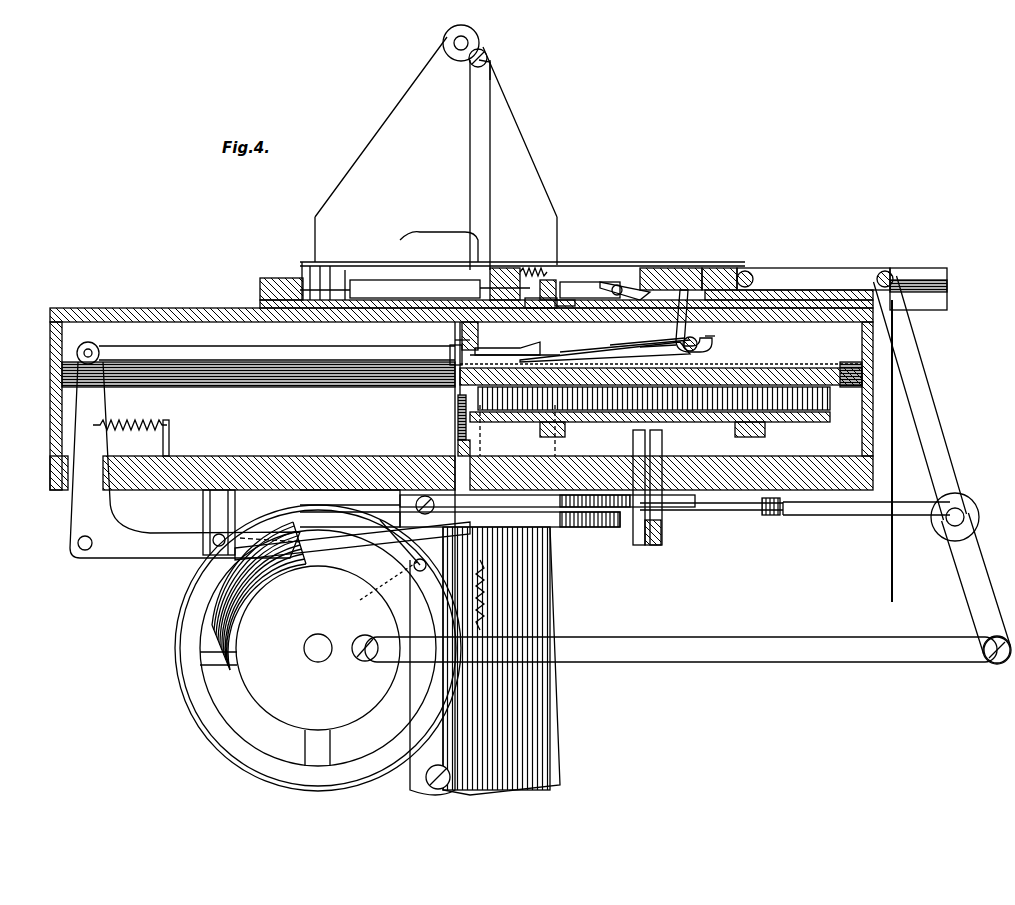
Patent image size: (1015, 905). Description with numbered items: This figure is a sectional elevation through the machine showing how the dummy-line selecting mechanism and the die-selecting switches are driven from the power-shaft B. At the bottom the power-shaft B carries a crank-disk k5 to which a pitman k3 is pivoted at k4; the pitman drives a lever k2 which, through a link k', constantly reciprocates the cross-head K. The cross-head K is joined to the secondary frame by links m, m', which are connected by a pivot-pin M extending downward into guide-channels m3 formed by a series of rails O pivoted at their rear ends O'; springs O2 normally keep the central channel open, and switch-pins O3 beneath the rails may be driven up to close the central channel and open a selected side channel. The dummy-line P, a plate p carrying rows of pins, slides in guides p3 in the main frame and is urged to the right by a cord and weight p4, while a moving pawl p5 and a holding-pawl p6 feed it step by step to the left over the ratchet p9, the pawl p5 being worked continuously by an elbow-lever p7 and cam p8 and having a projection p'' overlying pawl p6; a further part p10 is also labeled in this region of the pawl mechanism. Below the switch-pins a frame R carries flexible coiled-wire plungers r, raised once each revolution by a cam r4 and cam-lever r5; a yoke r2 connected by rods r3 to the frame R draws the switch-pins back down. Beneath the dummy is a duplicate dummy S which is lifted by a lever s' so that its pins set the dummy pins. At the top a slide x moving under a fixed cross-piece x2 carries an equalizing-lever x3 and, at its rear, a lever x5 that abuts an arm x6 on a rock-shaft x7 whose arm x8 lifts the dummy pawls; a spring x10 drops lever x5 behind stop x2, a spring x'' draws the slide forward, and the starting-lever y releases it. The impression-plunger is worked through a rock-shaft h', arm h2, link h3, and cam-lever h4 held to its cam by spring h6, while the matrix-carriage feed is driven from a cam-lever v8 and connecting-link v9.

The rock-shaft h' is at (435, 43).
The arm h2 is at (486, 44).
The link h3 is at (480, 200).
The pivot-pin M is at (280, 278).
The link m' is at (522, 271).
The guide-channels m3 is at (346, 285).
The rails O is at (439, 263).
The springs O2 is at (425, 291).
The rear ends of rails O' is at (512, 268).
The spring x'' is at (550, 251).
The equalizing-lever x3 is at (560, 280).
The link m is at (571, 277).
The lever x5 is at (605, 282).
The starting-lever y is at (622, 285).
The fixed cross-piece x2 is at (557, 287).
The slide x is at (623, 296).
The spring x10 is at (676, 310).
The cross-head K is at (735, 270).
The link k' is at (842, 278).
The board or plate p is at (403, 353).
The guides p3 is at (300, 380).
The dummy-line P is at (661, 364).
The ratchet p9 is at (815, 372).
The duplicate dummy S is at (818, 422).
The lever s' is at (657, 488).
The flexible plungers r is at (456, 422).
The frame R is at (458, 448).
The rods r3 is at (442, 441).
The switch-pins O3 is at (460, 345).
The yoke r2 is at (445, 348).
The moving pawl p5 is at (480, 348).
The projection p'' is at (515, 338).
The holding-pawl p6 is at (580, 356).
The lever p10 is at (625, 338).
The arm x8 is at (640, 348).
The rock-shaft x7 is at (658, 334).
The arm x6 is at (712, 335).
The elbow-lever p7 is at (185, 460).
The cam-lever r5 is at (352, 541).
The power-shaft B is at (320, 655).
The crank-disk k5 is at (318, 648).
The cam p8 is at (259, 596).
The pivot k4 is at (370, 660).
The cam r4 is at (386, 588).
The cam-lever h4 is at (410, 570).
The cam-lever v8 is at (485, 661).
The spring h6 is at (469, 595).
The pitman k3 is at (687, 647).
The connecting-link v9 is at (612, 530).
The cord and weight p4 is at (893, 588).
The lever k2 is at (950, 452).